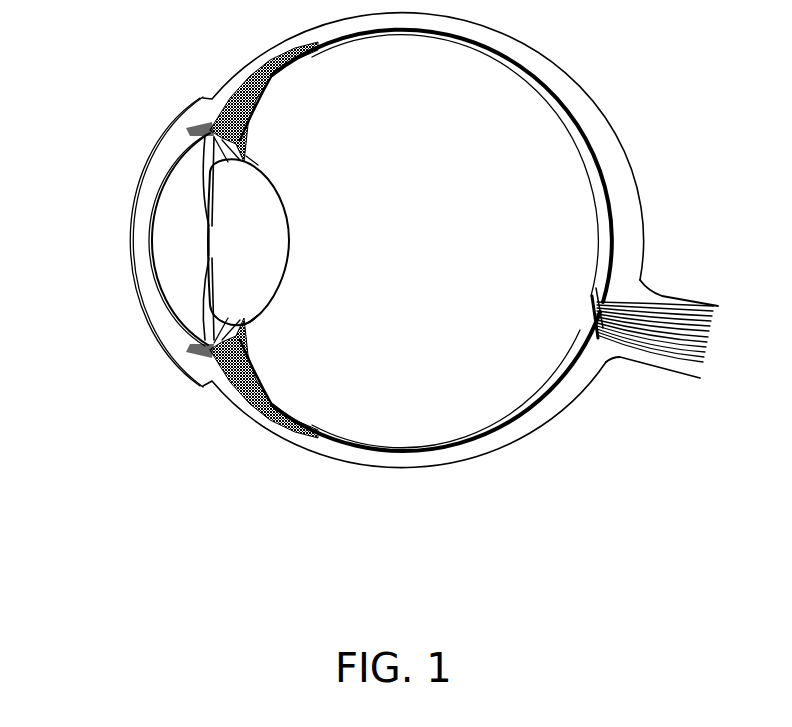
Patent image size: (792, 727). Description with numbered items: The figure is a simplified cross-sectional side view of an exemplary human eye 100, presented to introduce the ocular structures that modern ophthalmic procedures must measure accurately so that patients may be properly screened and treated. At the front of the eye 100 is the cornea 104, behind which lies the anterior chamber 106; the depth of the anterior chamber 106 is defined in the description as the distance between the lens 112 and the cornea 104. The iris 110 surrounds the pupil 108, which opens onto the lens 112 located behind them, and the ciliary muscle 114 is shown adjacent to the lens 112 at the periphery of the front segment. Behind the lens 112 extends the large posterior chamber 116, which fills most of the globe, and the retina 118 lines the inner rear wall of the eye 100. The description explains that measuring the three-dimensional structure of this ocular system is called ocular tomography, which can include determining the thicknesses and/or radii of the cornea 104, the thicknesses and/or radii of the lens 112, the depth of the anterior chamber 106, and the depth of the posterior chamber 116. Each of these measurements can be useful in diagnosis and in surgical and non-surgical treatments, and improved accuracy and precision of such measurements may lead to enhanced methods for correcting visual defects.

The human eye 100 is at (403, 565).
The cornea 104 is at (143, 205).
The anterior chamber 106 is at (200, 188).
The pupil 108 is at (209, 246).
The iris 110 is at (209, 320).
The lens 112 is at (288, 266).
The ciliary muscle 114 is at (247, 396).
The posterior chamber 116 is at (433, 204).
The retina 118 is at (598, 242).